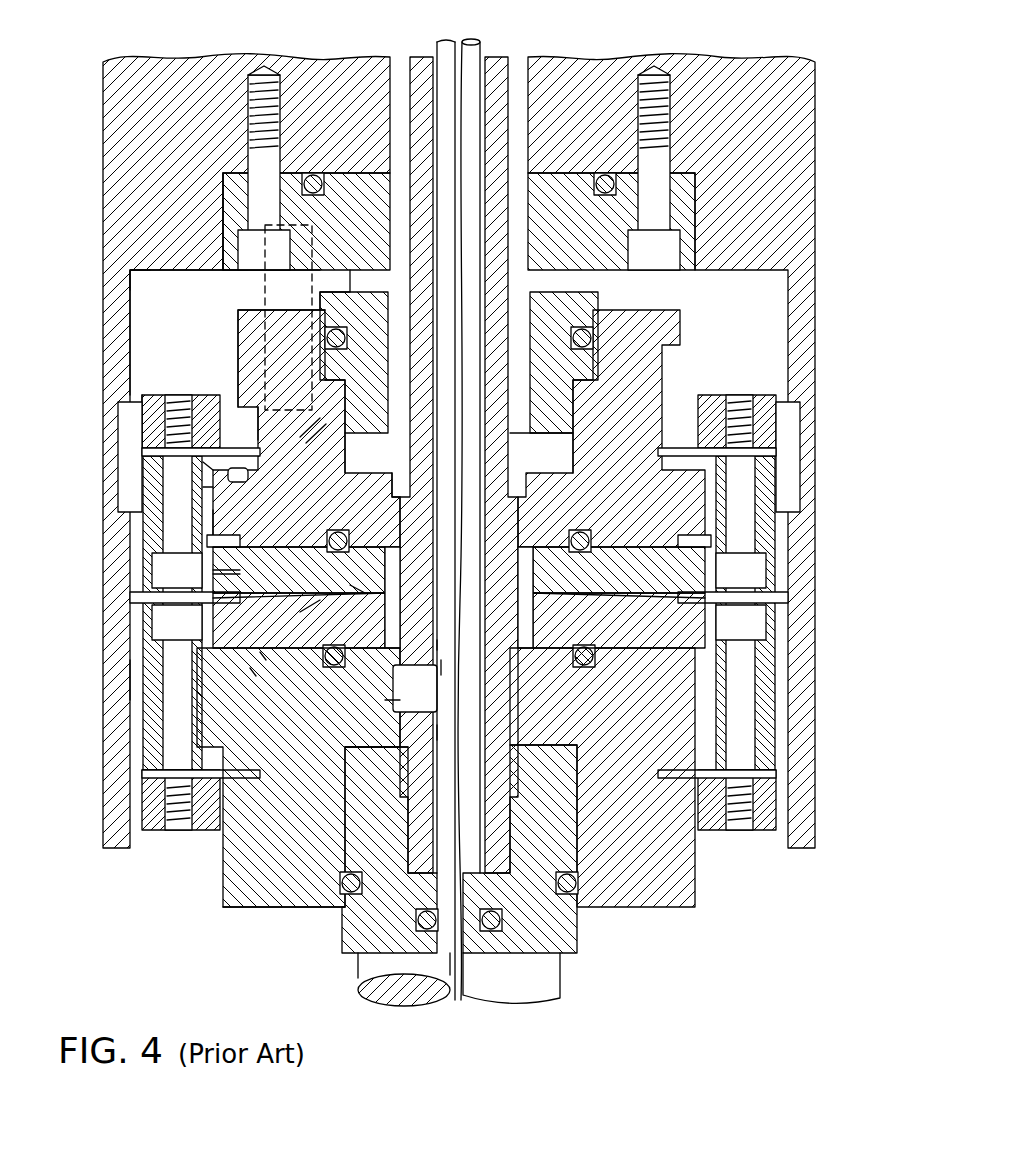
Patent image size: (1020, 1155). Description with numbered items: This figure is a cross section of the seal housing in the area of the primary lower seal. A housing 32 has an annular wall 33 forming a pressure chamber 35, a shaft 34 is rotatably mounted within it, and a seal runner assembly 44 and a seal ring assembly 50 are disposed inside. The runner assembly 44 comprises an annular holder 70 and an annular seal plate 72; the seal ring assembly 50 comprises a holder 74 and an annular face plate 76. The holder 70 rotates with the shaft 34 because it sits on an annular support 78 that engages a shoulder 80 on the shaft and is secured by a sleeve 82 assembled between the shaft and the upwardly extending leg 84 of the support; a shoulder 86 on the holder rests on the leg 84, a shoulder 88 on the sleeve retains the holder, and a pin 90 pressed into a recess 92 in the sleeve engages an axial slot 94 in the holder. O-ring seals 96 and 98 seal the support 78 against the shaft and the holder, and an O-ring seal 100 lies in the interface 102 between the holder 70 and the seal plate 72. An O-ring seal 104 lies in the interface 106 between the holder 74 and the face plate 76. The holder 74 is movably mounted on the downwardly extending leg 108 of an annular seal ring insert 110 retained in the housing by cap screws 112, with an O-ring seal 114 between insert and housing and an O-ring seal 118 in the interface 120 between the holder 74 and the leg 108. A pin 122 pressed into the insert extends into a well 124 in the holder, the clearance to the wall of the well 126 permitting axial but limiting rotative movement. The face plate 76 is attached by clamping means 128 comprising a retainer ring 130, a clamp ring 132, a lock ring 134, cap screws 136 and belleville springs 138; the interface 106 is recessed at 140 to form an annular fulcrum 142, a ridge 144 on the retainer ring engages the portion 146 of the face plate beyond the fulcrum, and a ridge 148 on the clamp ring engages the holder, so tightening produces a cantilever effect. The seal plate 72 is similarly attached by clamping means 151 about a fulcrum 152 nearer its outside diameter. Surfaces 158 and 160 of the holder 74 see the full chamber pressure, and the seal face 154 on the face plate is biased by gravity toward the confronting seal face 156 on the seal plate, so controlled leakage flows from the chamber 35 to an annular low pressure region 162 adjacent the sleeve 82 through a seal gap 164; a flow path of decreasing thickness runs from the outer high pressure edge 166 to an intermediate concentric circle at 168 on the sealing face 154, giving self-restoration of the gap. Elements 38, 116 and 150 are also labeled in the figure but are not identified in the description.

The housing 32 is at (250, 50).
The annular wall 33 is at (132, 278).
The shaft 34 is at (480, 40).
The pressure chamber 35 is at (157, 302).
The lower body 38 is at (712, 890).
The seal runner assembly 44 is at (271, 770).
The seal ring assembly 50 is at (303, 482).
The annular holder 70 is at (235, 912).
The annular seal plate 72 is at (262, 656).
The holder 74 is at (260, 372).
The annular face plate 76 is at (265, 553).
The annular support 78 is at (358, 956).
The shoulder 80 is at (380, 980).
The sleeve 82 is at (512, 708).
The leg 84 is at (350, 822).
The shoulder 86 is at (352, 745).
The shoulder 88 is at (438, 646).
The pin 90 is at (403, 693).
The recess 92 is at (442, 668).
The axial slot 94 is at (438, 734).
The O-ring seal 96 is at (416, 921).
The O-ring seal 98 is at (341, 882).
The O-ring seal 100 is at (380, 700).
The interface 102 is at (332, 668).
The O-ring seal 104 is at (396, 500).
The interface 106 is at (336, 533).
The leg 108 is at (355, 450).
The seal ring insert 110 is at (226, 200).
The cap screws 112 is at (240, 250).
The O-ring seal 114 is at (318, 176).
The cap 116 is at (345, 175).
The O-ring seal 118 is at (349, 338).
The interface 120 is at (360, 366).
The pin 122 is at (312, 240).
The well 124 is at (266, 395).
The wall of the well 126 is at (314, 426).
The clamping means 128 is at (130, 429).
The retainer ring 130 is at (185, 575).
The clamp ring 132 is at (205, 487).
The lock ring 134 is at (130, 390).
The cap screws 136 is at (178, 395).
The belleville springs 138 is at (230, 452).
The recess 140 is at (213, 520).
The annular fulcrum 142 is at (190, 597).
The ridge 144 is at (160, 622).
The portion of the face plate 146 is at (160, 570).
The ridge 148 is at (210, 466).
The plate 150 is at (225, 538).
The clamping means 151 is at (122, 696).
The fulcrum 152 is at (253, 672).
The seal face 154 is at (358, 590).
The seal face 156 is at (316, 620).
The surface 158 is at (238, 481).
The surface 160 is at (303, 287).
The annular low pressure region 162 is at (399, 573).
The seal gap 164 is at (300, 612).
The high pressure edge 166 is at (232, 572).
The intermediate concentric circle 168 is at (398, 596).